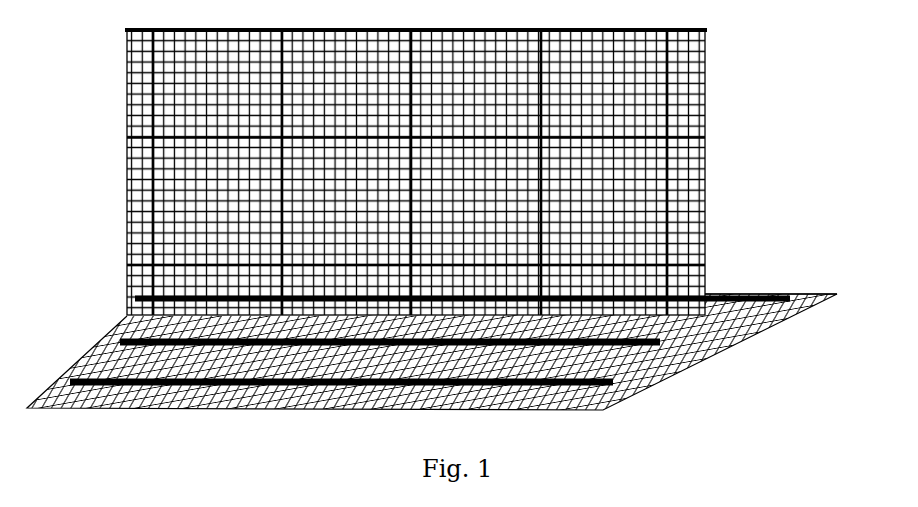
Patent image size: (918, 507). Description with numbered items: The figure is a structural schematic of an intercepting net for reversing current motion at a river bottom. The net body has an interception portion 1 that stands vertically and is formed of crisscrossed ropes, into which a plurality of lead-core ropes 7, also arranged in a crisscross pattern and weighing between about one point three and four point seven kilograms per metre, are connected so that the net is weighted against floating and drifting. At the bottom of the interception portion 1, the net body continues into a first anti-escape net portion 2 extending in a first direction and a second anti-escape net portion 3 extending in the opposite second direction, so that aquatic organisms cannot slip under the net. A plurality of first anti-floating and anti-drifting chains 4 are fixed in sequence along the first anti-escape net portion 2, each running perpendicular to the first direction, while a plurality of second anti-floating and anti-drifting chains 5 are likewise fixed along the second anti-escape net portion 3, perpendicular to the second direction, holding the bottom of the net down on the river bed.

The interception portion 1 is at (692, 183).
The lead-core rope 7 is at (667, 97).
The first anti-escape net portion 2 is at (686, 330).
The second anti-escape net portion 3 is at (810, 297).
The first anti-floating and anti-drifting chain 4 is at (642, 343).
The second anti-floating and anti-drifting chain 5 is at (742, 300).